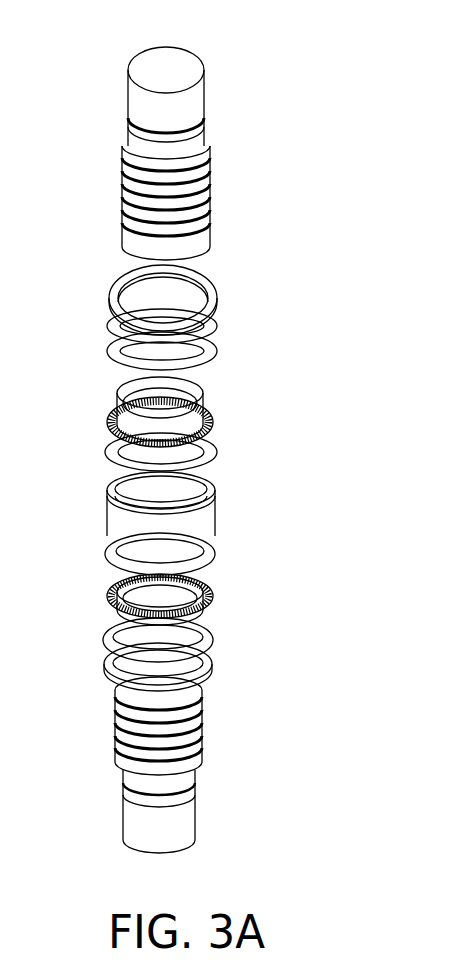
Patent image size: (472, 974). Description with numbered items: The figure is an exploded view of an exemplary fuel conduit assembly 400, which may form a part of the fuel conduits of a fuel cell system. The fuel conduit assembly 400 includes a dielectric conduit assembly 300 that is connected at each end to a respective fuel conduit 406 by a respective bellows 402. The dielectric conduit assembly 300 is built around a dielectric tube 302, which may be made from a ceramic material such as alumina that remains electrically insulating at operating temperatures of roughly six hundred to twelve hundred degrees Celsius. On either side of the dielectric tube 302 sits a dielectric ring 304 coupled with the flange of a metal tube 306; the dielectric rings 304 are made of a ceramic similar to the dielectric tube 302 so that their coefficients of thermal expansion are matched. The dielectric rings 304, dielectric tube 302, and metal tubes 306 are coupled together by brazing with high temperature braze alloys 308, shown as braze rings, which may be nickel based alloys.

The dielectric conduit assembly 300 is at (345, 192).
The dielectric tube 302 is at (225, 510).
The dielectric ring 304 is at (222, 285).
The metal tube 306 is at (110, 583).
The braze alloy 308 is at (222, 345).
The fuel conduit assembly 400 is at (105, 842).
The bellows 402 is at (213, 217).
The fuel conduit 406 is at (208, 110).